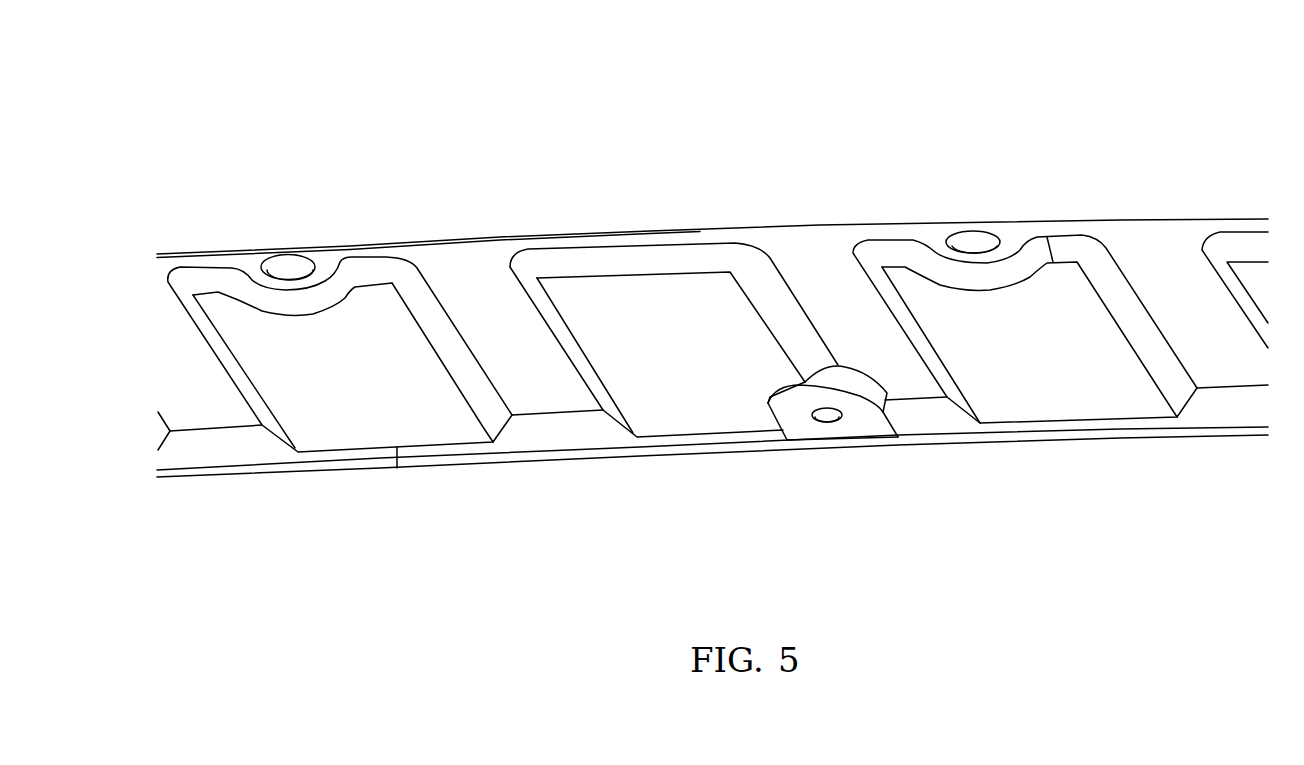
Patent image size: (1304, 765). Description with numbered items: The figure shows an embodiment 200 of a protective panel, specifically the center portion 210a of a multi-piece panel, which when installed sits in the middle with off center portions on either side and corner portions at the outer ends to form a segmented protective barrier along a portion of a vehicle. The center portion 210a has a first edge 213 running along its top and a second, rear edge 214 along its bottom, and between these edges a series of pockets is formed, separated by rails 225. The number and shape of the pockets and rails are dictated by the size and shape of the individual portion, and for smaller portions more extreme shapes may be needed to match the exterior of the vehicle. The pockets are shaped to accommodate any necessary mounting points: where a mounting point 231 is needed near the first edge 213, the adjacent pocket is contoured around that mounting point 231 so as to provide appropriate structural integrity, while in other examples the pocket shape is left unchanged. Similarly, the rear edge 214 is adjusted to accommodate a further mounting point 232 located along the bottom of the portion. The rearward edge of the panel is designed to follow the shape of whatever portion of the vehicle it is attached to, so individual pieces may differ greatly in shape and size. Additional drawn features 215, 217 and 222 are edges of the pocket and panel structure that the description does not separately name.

The embodiment of a protective panel 200 is at (703, 45).
The center portion 210a is at (410, 172).
The first edge 213 is at (783, 228).
The second edge 214 is at (577, 444).
The bottom edge 215 is at (713, 440).
The window outer edge 217 is at (627, 240).
The window side wall 222 is at (480, 423).
The rail 225 is at (935, 373).
The mounting point 231 is at (968, 247).
The mounting point 232 is at (830, 418).